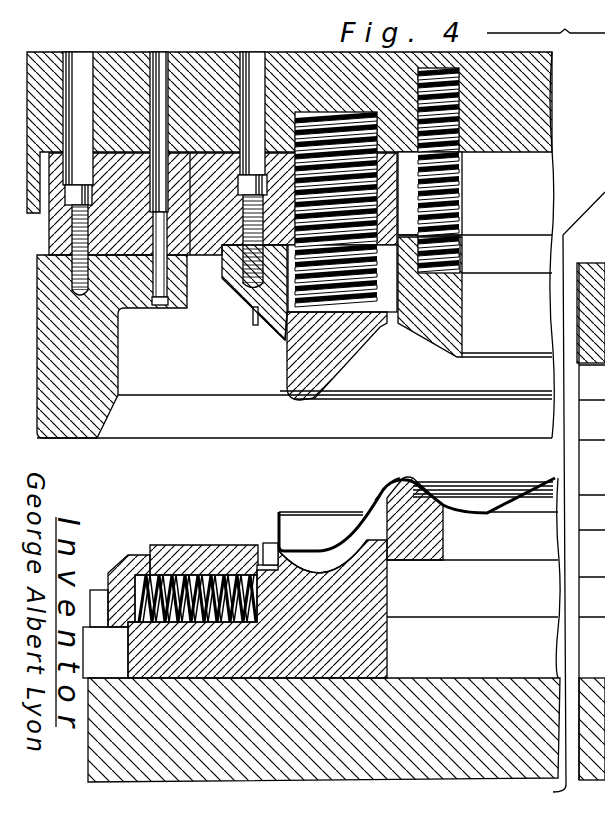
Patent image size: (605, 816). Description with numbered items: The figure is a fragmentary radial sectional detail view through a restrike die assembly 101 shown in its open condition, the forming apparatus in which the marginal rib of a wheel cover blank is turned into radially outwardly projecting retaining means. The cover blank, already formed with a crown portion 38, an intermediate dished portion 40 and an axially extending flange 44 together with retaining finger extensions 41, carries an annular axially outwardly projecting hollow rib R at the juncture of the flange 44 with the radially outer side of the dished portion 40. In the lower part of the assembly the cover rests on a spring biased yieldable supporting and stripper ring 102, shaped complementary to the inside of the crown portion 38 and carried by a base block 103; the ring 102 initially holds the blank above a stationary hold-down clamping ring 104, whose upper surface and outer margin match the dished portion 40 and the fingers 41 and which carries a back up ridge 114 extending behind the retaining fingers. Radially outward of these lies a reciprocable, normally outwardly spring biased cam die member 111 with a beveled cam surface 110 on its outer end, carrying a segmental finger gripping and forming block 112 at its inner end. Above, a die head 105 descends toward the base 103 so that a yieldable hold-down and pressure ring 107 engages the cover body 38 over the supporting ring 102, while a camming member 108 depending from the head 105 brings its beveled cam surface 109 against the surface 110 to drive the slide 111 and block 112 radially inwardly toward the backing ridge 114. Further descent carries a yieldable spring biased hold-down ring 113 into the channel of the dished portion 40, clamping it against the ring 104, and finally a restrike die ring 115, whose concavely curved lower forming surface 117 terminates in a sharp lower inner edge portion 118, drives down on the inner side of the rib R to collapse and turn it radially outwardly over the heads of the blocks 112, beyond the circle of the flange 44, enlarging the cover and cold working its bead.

The crown portion 38 is at (383, 490).
The intermediate dished portion 40 is at (318, 551).
The retaining finger extensions 41 is at (274, 546).
The axially extending flange 44 is at (278, 514).
The hollow rib R is at (277, 517).
The die assembly 101 is at (568, 191).
The supporting and stripper ring 102 is at (413, 483).
The base block 103 is at (442, 697).
The hold-down clamping ring 104 is at (388, 597).
The die head 105 is at (540, 92).
The hold-down and pressure ring 107 is at (437, 333).
The camming member 108 is at (100, 362).
The beveled cam surface 109 is at (112, 408).
The beveled cam surface 110 is at (118, 563).
The cam die member 111 is at (138, 557).
The finger gripping and forming block 112 is at (197, 552).
The hold-down ring 113 is at (328, 385).
The back up ridge 114 is at (282, 557).
The restrike die ring 115 is at (250, 306).
The lower forming surface 117 is at (262, 330).
The lower inner edge portion 118 is at (285, 343).